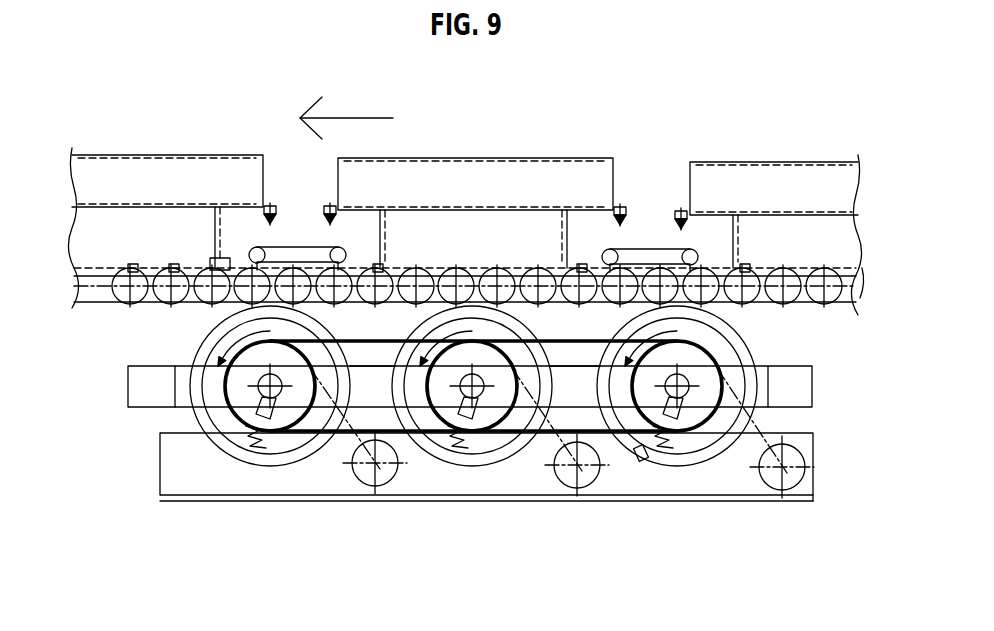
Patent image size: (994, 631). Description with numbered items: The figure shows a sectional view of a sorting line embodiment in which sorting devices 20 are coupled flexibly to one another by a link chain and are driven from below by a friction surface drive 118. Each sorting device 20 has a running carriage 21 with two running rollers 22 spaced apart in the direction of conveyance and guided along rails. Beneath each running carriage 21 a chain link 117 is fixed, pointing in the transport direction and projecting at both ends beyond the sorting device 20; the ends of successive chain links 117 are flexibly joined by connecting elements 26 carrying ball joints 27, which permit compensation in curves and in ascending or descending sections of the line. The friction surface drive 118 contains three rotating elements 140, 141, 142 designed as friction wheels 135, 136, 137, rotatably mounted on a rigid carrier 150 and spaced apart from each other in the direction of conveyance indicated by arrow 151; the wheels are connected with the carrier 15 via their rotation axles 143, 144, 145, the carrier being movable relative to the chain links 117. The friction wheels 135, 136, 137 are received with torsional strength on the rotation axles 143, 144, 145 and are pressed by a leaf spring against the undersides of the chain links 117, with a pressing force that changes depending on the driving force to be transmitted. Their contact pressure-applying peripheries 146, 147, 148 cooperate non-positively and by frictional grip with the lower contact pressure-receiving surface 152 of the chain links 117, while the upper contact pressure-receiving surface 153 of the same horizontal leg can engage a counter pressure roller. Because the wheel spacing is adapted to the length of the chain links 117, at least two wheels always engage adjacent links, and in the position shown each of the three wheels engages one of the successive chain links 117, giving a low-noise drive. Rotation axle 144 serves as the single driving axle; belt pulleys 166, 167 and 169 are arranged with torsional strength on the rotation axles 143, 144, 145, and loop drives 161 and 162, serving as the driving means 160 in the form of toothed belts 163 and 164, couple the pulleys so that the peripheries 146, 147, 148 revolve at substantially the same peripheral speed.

The carrier 15 is at (118, 426).
The sorting device 20 is at (92, 178).
The running carriage 21 is at (100, 240).
The running roller 22 is at (130, 304).
The connecting element 26 is at (641, 249).
The ball joint 27 is at (603, 250).
The chain link 117 is at (98, 305).
The friction surface drive 118 is at (756, 330).
The friction wheel 135 is at (220, 313).
The friction wheel 136 is at (372, 386).
The friction wheel 137 is at (575, 386).
The rotating element 140 is at (177, 414).
The rotating element 141 is at (540, 436).
The rotating element 142 is at (740, 440).
The rotation axle 143 is at (252, 425).
The rotation axle 144 is at (505, 410).
The rotation axle 145 is at (688, 405).
The contact pressure-applying periphery 146 is at (322, 313).
The contact pressure-applying periphery 147 is at (432, 468).
The contact pressure-applying periphery 148 is at (645, 462).
The rigid carrier 150 is at (128, 386).
The arrow 151 is at (370, 113).
The contact pressure-receiving surface 152 is at (808, 313).
The contact pressure-receiving surface 153 is at (862, 268).
The driving means 160 is at (305, 472).
The loop drive 161 is at (277, 450).
The loop drive 162 is at (547, 333).
The toothed belt 163 is at (408, 490).
The toothed belt 164 is at (607, 488).
The belt pulley 166 is at (230, 387).
The belt pulley 167 is at (472, 482).
The belt pulley 169 is at (773, 398).